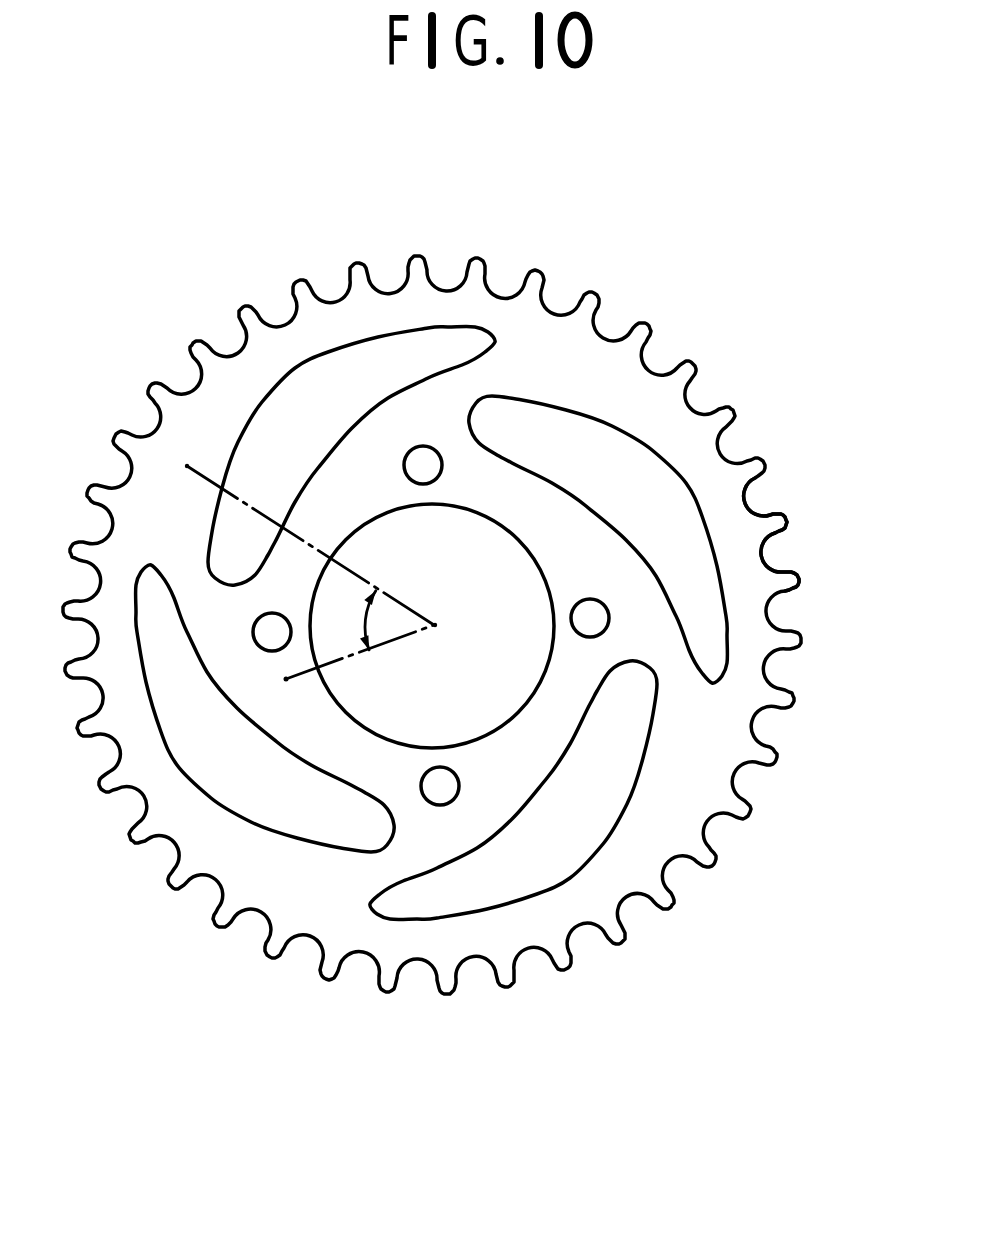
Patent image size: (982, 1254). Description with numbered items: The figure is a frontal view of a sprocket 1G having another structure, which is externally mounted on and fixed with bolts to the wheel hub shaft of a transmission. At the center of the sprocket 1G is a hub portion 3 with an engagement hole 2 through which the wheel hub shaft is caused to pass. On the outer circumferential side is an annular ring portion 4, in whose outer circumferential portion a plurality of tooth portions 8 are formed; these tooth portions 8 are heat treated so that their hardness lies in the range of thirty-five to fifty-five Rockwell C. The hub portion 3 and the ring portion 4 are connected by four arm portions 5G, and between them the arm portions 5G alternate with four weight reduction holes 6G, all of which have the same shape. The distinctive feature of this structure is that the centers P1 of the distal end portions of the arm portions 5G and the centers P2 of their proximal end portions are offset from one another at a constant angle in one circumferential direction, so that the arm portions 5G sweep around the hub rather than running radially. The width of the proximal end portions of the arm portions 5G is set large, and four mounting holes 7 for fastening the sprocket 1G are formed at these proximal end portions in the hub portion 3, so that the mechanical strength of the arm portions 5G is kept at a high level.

The sprocket 1G is at (713, 323).
The engagement hole 2 is at (472, 589).
The hub portion 3 is at (540, 703).
The annular ring portion 4 is at (748, 517).
The arm portions 5G is at (443, 398).
The weight reduction holes 6G is at (653, 498).
The mounting holes 7 is at (444, 770).
The tooth portions 8 is at (778, 578).
The centers of the distal end portions P1 is at (187, 466).
The centers of the proximal end portions P2 is at (286, 679).